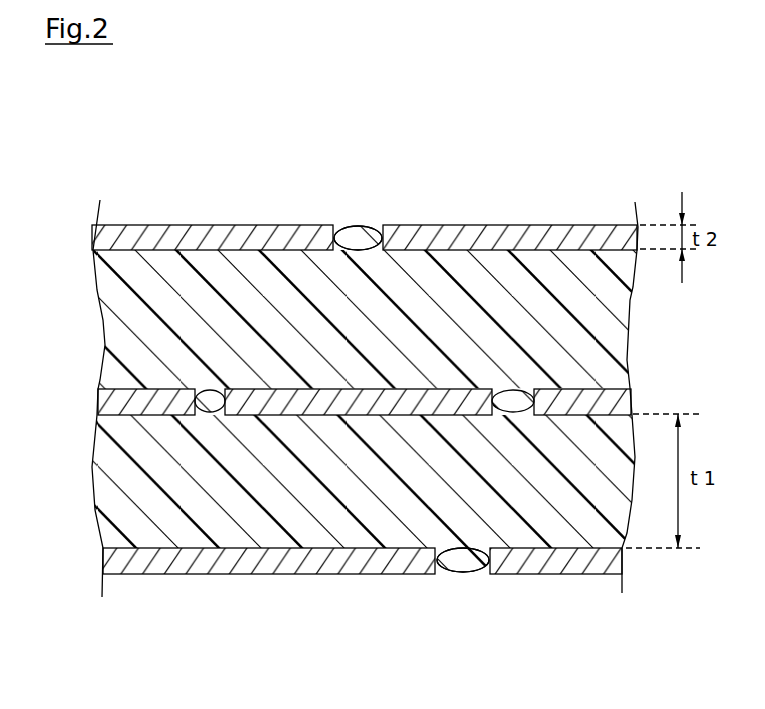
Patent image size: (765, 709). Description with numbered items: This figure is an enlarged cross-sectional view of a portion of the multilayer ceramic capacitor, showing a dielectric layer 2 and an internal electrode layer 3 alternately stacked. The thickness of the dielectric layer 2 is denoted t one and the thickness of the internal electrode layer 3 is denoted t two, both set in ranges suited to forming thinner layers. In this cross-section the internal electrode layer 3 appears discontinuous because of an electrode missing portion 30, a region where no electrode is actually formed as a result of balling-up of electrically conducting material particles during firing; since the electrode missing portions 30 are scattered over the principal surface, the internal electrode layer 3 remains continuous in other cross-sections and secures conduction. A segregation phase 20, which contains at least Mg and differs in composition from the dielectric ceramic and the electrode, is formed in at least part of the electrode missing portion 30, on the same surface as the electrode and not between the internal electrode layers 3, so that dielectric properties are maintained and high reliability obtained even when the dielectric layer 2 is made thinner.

The dielectric layer 2 is at (185, 277).
The internal electrode layer 3 is at (543, 240).
The segregation phase 20 is at (363, 226).
The electrode missing portion 30 is at (338, 226).